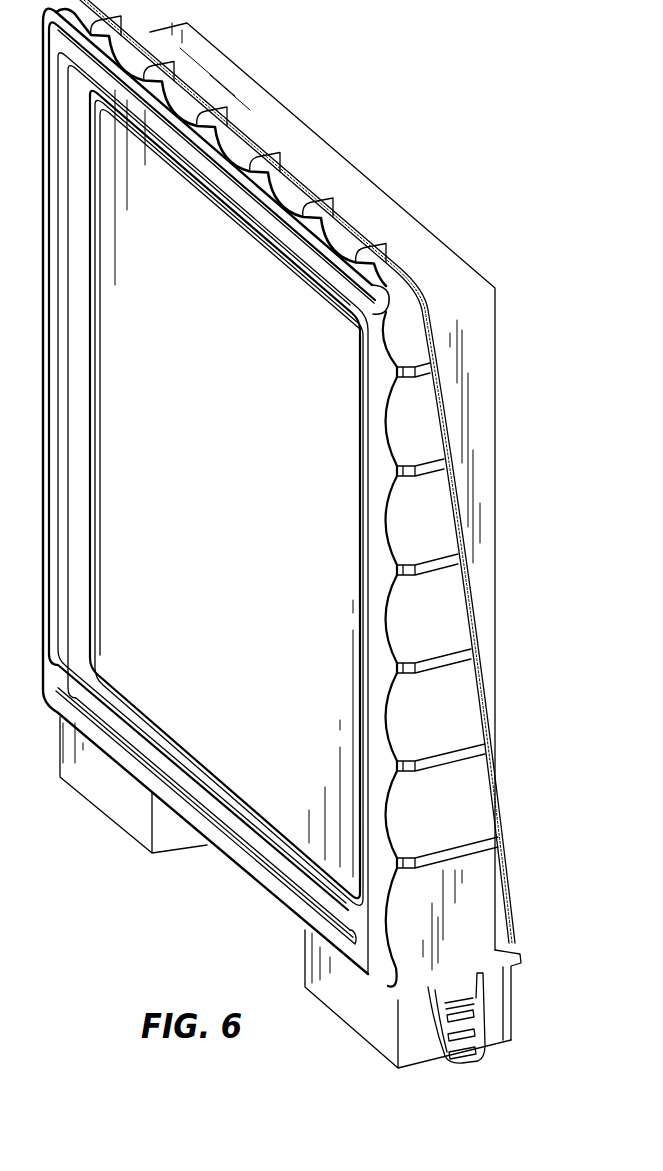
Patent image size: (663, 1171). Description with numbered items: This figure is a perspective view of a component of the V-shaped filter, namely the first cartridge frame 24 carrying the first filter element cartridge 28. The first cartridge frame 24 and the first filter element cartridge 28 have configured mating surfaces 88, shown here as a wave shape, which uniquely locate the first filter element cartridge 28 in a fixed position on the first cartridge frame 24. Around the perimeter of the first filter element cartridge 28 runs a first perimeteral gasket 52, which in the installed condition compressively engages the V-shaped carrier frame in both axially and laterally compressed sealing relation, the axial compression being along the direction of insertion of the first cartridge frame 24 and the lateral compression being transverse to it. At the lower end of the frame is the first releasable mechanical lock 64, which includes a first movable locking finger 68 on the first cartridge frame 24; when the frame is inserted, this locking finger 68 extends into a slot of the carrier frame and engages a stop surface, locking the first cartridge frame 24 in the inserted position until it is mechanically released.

The first cartridge frame 24 is at (478, 622).
The first filter element cartridge 28 is at (483, 488).
The first perimeteral gasket 52 is at (380, 675).
The first releasable mechanical lock 64 is at (480, 1073).
The first movable locking finger 68 is at (455, 1063).
The configured mating surfaces 88 is at (393, 445).